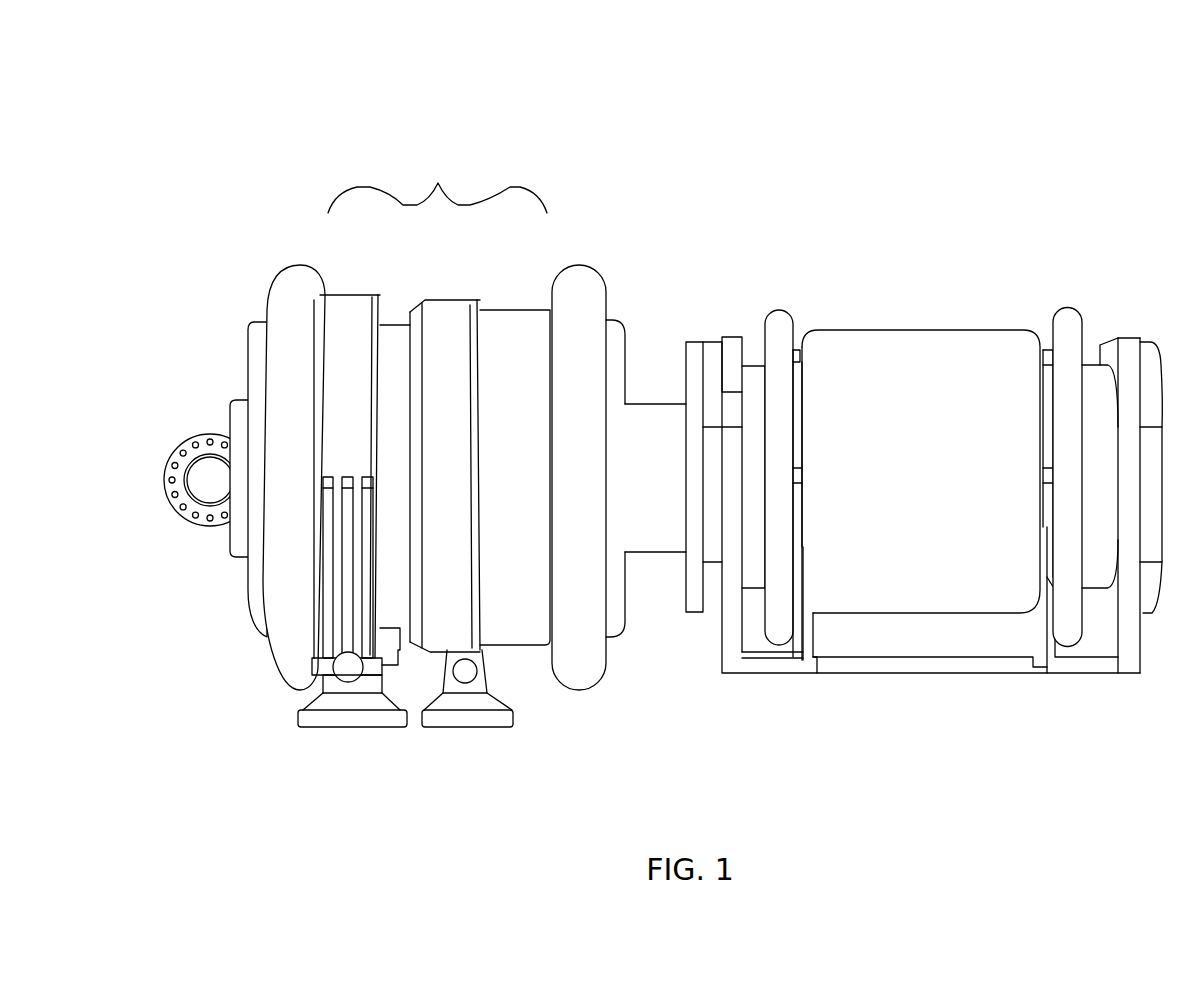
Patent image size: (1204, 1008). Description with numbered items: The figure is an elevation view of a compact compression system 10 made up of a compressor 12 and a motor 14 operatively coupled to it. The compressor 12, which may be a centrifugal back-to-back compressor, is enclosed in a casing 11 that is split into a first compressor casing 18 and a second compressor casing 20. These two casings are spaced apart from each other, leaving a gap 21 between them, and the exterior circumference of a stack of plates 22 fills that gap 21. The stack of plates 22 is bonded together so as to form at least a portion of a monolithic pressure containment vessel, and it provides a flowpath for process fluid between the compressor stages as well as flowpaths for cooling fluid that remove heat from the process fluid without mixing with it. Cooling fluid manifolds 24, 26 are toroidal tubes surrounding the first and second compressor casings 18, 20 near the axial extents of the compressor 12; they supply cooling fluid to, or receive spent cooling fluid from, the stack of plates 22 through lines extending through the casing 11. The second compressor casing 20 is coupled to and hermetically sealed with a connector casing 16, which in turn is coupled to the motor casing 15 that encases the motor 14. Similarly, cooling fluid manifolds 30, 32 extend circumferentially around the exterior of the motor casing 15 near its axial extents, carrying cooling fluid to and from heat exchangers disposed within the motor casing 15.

The compact compression system 10 is at (364, 66).
The casing 11 is at (438, 183).
The compressor 12 is at (474, 181).
The motor 14 is at (943, 190).
The motor casing 15 is at (863, 333).
The connector casing 16 is at (643, 545).
The first compressor casing 18 is at (340, 300).
The second compressor casing 20 is at (500, 312).
The gap 21 is at (400, 636).
The stack of plates 22 is at (397, 330).
The cooling fluid manifold 24 is at (298, 262).
The cooling fluid manifold 26 is at (583, 275).
The cooling fluid manifold 30 is at (778, 312).
The cooling fluid manifold 32 is at (1070, 633).